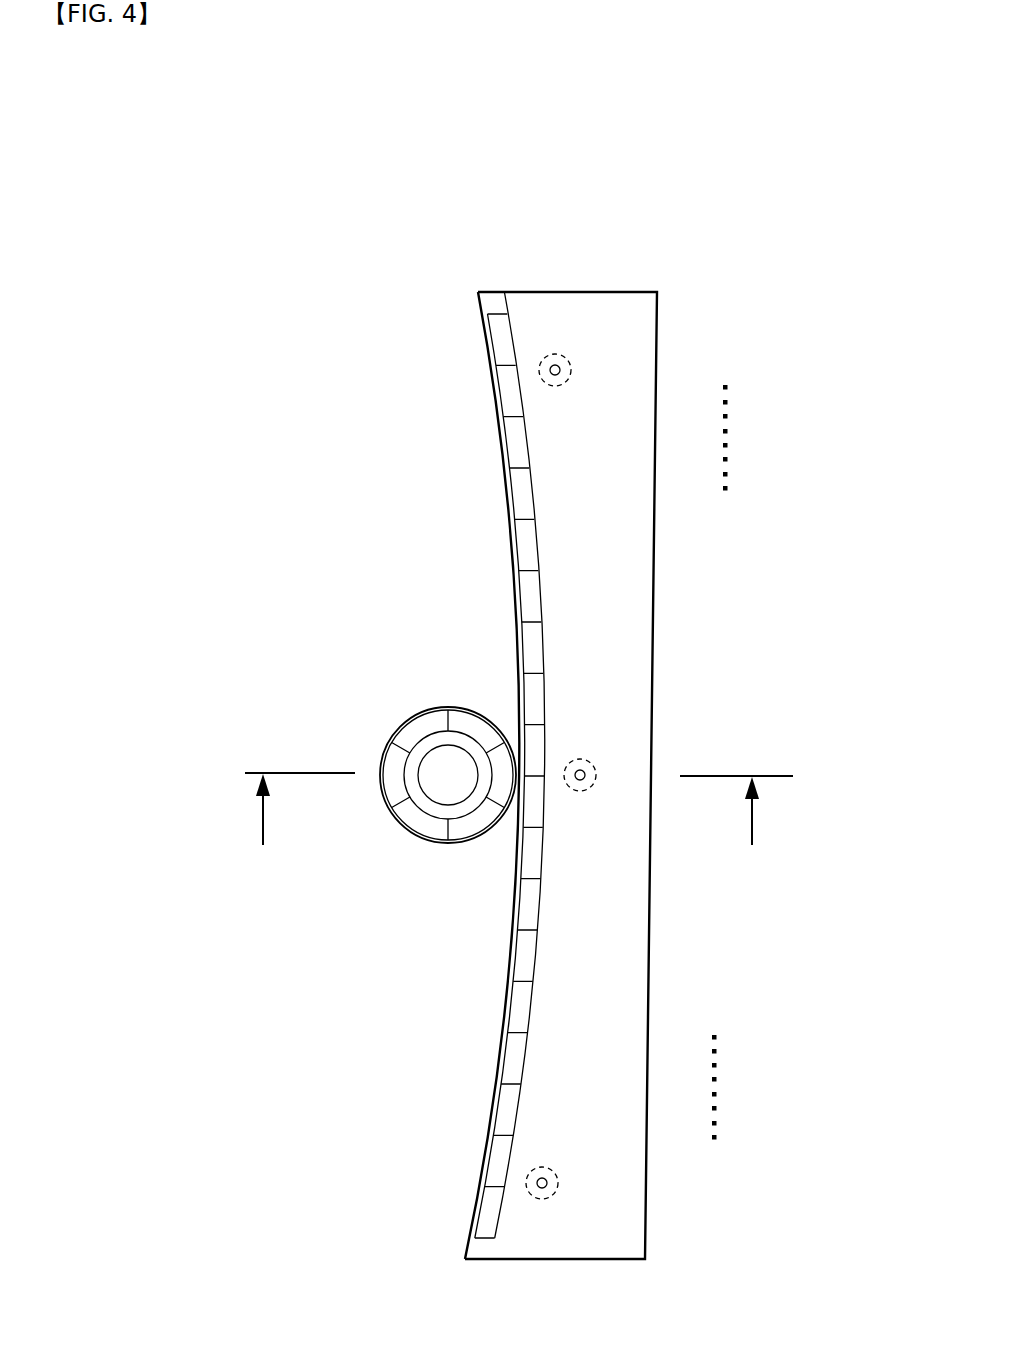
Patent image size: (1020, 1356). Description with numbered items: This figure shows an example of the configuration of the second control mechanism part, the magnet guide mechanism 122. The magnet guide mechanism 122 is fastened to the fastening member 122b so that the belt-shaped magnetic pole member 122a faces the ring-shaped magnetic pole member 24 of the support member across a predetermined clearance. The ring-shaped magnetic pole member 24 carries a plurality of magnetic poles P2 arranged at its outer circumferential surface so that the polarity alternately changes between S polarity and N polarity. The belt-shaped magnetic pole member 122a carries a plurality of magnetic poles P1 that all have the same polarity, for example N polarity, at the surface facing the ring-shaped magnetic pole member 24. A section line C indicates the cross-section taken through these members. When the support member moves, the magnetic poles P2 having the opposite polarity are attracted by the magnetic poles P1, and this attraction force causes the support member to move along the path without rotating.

The magnet guide mechanism 122 is at (672, 643).
The belt-shaped magnetic pole member 122a is at (512, 327).
The fastening member 122b is at (617, 292).
The ring-shaped magnetic pole member 24 is at (418, 840).
The magnetic poles P1 is at (506, 292).
The magnetic poles P2 is at (431, 707).
The C-C cross-section C is at (519, 840).